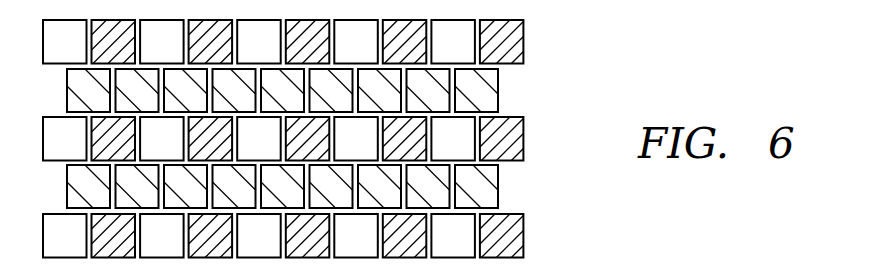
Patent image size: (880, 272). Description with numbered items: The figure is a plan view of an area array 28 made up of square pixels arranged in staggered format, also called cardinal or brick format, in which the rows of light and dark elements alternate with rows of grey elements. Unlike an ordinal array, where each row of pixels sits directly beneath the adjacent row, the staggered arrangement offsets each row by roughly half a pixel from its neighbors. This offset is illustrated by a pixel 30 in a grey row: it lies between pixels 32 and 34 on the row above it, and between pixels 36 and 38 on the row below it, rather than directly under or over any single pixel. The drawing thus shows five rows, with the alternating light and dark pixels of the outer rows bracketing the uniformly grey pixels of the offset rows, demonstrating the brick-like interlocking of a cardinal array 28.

The area array 28 is at (585, 50).
The pixel 30 is at (488, 188).
The pixel 32 is at (466, 150).
The pixel 34 is at (513, 136).
The pixel 36 is at (466, 250).
The pixel 38 is at (507, 235).